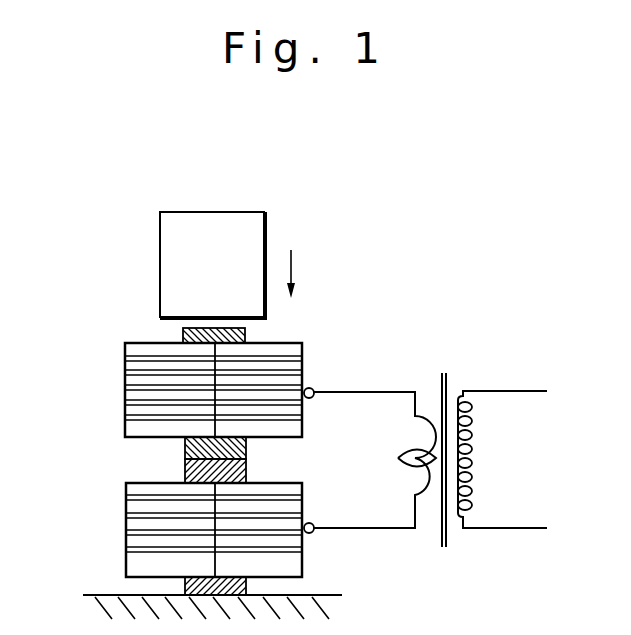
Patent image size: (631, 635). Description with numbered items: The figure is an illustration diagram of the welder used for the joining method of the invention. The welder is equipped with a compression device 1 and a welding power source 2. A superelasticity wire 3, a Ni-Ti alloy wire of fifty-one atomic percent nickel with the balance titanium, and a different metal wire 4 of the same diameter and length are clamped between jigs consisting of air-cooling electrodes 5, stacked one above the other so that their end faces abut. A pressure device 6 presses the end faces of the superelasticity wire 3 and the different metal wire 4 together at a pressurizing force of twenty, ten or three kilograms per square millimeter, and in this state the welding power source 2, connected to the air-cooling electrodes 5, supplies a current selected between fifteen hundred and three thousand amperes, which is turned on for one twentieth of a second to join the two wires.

The compression device 1 is at (204, 458).
The welding power source 2 is at (465, 313).
The superelasticity wire material 3 is at (248, 446).
The different metal wire material 4 is at (248, 473).
The air-cooling electrode jigs 5 is at (283, 363).
The pressure device 6 is at (250, 238).